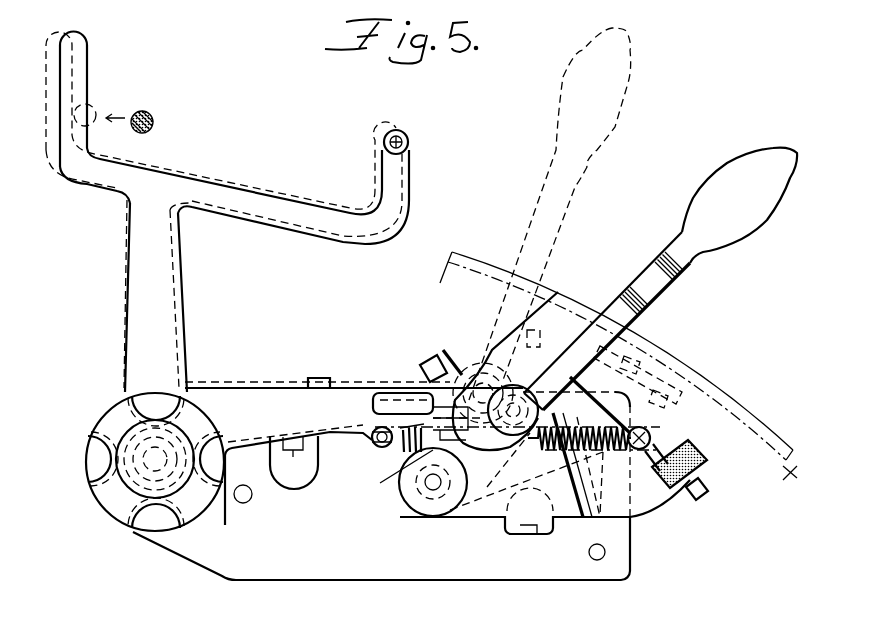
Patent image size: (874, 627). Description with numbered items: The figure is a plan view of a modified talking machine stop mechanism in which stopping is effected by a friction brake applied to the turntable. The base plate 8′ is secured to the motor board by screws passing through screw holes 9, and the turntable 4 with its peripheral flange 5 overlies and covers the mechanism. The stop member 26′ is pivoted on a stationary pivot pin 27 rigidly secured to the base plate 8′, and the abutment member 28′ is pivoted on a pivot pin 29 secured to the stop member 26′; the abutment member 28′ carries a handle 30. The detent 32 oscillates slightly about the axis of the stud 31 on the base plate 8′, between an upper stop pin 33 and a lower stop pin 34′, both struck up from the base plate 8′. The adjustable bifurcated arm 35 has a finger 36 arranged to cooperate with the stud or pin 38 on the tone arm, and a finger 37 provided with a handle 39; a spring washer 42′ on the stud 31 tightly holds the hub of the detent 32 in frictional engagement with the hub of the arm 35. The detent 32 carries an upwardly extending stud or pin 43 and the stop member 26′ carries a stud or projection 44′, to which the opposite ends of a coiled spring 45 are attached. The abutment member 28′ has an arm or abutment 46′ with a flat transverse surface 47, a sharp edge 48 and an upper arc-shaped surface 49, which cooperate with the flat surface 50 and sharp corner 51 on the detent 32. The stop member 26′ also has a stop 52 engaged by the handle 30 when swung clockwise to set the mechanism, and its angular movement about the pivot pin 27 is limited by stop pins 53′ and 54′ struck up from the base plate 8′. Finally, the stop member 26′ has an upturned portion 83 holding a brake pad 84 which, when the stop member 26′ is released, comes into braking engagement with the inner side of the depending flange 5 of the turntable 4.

The finger 36 is at (87, 75).
The stud or pin 38 is at (148, 111).
The finger 37 is at (390, 182).
The handle 39 is at (408, 140).
The adjustable bifurcated arm 35 is at (188, 304).
The spring washer 42′ is at (110, 423).
The stud 31 is at (154, 460).
The detent 32 is at (354, 453).
The upper stop pin 33 is at (320, 378).
The lower stop pin 34′ is at (294, 462).
The base plate 8′ is at (396, 486).
The screw holes 9 is at (580, 553).
The stop pin 54′ is at (530, 534).
The stud or pin 43 is at (361, 444).
The flat transverse surface 47 is at (392, 463).
The arm or abutment 46′ is at (390, 472).
The flat surface 50 is at (421, 411).
The sharp corner 51 is at (451, 431).
The pivot pin 27 is at (428, 490).
The stop pin 53′ is at (418, 368).
The sharp edge 48 is at (433, 378).
The upper arc-shaped surface 49 is at (458, 387).
The pivot pin 29 is at (510, 408).
The abutment member 28′ is at (490, 443).
The stop member 26′ is at (545, 465).
The handle 30 is at (633, 219).
The stop 52 is at (573, 365).
The peripheral flange 5 is at (762, 425).
The turntable 4 is at (791, 482).
The coiled spring 45 is at (598, 455).
The stud or projection 44′ is at (652, 437).
The brake pad 84 is at (704, 458).
The upturned portion 83 is at (700, 491).